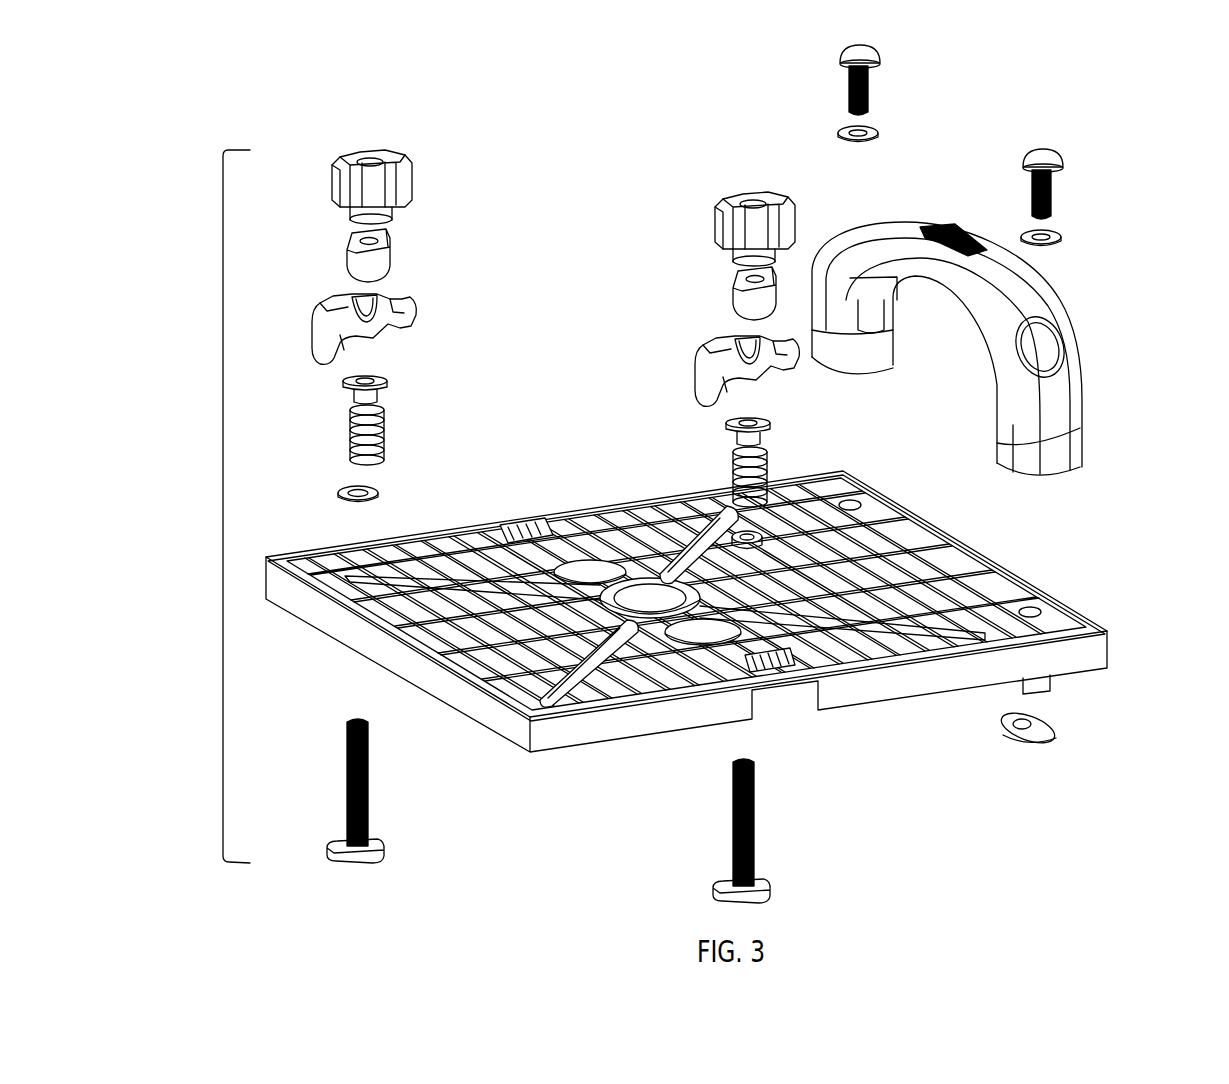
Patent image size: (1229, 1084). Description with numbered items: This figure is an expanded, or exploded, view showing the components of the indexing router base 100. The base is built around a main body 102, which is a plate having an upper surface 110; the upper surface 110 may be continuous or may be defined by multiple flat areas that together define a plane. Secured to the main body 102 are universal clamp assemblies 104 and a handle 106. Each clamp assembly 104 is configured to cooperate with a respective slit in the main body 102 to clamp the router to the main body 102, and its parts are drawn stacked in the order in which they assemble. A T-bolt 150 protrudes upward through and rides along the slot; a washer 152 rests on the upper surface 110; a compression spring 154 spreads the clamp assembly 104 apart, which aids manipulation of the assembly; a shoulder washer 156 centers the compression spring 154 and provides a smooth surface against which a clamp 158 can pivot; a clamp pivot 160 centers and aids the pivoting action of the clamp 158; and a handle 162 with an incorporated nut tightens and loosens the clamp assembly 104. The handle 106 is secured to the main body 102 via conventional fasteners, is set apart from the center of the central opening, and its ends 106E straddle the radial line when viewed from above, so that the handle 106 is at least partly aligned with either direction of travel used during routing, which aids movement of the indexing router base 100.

The indexing router base 100 is at (217, 114).
The main body 102 is at (847, 695).
The universal clamp assembly 104 is at (221, 508).
The handle 106 is at (1077, 392).
The ends of the handle 106E is at (900, 360).
The upper surface 110 is at (550, 522).
The T-bolt 150 is at (343, 752).
The washer 152 is at (340, 498).
The compression spring 154 is at (345, 448).
The shoulder washer 156 is at (343, 383).
The clamp 158 is at (312, 327).
The clamp pivot 160 is at (345, 265).
The handle with incorporated nut 162 is at (330, 187).